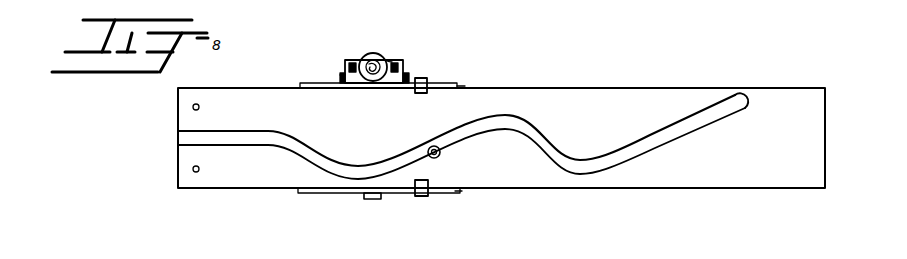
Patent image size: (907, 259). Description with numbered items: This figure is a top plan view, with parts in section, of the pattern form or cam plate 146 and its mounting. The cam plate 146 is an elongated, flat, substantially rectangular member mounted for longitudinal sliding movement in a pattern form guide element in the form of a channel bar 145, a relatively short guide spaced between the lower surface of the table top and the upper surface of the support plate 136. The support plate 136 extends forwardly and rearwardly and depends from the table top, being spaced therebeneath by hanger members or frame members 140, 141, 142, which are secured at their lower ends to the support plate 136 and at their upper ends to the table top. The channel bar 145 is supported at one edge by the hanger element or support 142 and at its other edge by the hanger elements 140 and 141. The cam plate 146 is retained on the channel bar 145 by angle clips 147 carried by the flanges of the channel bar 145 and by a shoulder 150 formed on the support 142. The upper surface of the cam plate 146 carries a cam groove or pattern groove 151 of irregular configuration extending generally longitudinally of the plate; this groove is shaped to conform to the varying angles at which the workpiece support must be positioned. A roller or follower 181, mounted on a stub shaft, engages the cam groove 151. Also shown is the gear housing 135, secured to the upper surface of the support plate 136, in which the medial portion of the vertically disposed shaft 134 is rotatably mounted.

The vertically disposed shaft 134 is at (362, 56).
The gear housing 135 is at (371, 53).
The support plate 136 is at (398, 58).
The hanger member 140 is at (340, 74).
The hanger member 141 is at (404, 80).
The hanger element 142 is at (369, 199).
The channel bar 145 is at (460, 85).
The cam plate 146 is at (826, 147).
The angle clips 147 is at (423, 82).
The shoulder 150 is at (356, 205).
The cam groove 151 is at (565, 146).
The follower 181 is at (440, 132).